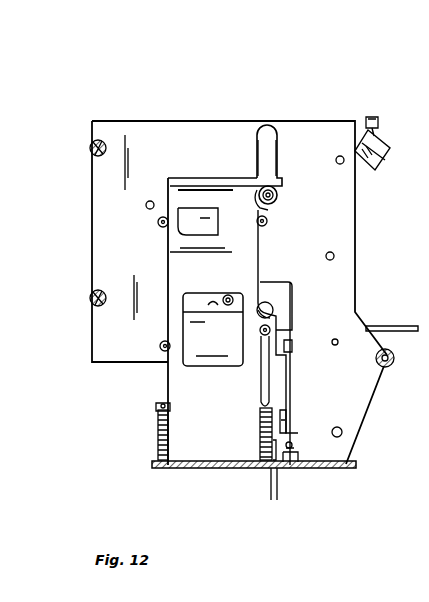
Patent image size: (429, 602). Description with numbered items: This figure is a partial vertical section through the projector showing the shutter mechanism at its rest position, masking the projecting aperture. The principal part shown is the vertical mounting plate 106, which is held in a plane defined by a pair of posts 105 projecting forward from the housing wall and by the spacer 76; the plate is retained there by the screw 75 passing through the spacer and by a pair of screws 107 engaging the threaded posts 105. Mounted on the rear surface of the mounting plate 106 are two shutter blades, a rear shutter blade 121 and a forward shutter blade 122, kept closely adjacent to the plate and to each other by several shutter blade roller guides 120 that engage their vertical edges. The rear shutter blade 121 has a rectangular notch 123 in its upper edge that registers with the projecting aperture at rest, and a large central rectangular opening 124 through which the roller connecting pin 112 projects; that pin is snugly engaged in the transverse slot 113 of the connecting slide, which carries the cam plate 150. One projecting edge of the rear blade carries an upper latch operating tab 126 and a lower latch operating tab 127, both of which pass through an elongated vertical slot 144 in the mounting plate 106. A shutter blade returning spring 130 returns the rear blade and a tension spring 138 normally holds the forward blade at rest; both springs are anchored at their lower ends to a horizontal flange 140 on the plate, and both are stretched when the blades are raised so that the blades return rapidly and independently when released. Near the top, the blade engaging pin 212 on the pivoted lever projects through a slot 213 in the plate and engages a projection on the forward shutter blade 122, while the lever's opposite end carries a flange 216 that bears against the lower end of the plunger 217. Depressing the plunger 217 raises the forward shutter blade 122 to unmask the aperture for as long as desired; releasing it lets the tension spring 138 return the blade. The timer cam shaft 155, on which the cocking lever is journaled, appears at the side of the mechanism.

The mounting plate 106 is at (190, 130).
The posts 105 is at (91, 145).
The screws 107 is at (95, 150).
The forward shutter blade 122 is at (199, 190).
The slot 213 is at (265, 160).
The blade engaging pin 212 is at (278, 195).
The rectangular notch 123 is at (206, 233).
The rear shutter blade 121 is at (222, 262).
The shutter blade roller guides 120 is at (158, 226).
The roller connecting pin 112 is at (229, 294).
The transverse slot 113 is at (220, 318).
The central rectangular opening 124 is at (220, 364).
The elongated vertical slot 144 is at (296, 383).
The upper latch operating tab 126 is at (291, 345).
The lower latch operating tab 127 is at (292, 423).
The shutter blade returning spring 130 is at (260, 432).
The tension spring 138 is at (156, 441).
The horizontal flange 140 is at (328, 469).
The cam plate 150 is at (290, 488).
The timer cam shaft 155 is at (388, 326).
The screw 75 is at (393, 356).
The spacer 76 is at (388, 368).
The plunger 217 is at (377, 118).
The flange 216 is at (382, 146).